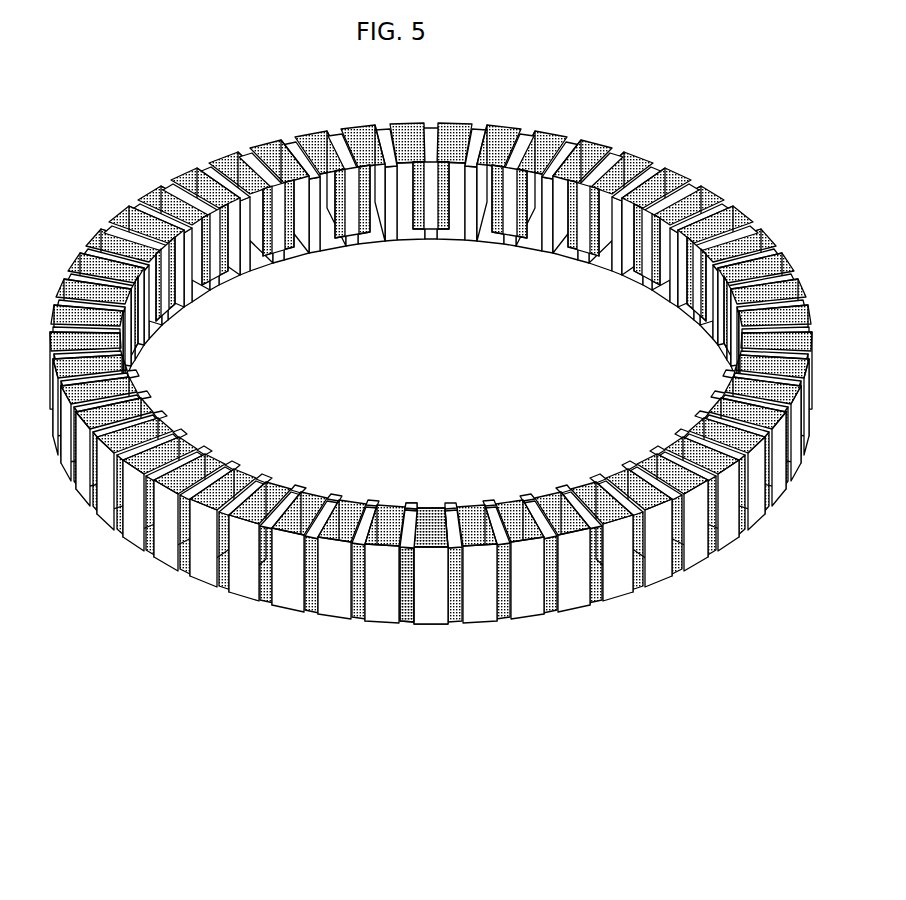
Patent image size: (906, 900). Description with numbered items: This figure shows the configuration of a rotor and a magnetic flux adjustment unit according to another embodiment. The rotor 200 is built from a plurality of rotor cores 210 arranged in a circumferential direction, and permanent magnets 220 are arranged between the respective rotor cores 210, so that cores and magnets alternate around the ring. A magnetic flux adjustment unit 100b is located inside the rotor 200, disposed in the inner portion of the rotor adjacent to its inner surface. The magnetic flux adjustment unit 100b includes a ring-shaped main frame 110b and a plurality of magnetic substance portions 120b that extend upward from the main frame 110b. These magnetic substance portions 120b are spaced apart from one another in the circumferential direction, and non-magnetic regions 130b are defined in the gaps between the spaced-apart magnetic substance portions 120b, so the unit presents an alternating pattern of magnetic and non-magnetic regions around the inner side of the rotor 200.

The magnetic flux adjustment unit 100b is at (431, 263).
The main frame 110b is at (510, 243).
The magnetic substance portions 120b is at (547, 218).
The non-magnetic regions 130b is at (573, 247).
The rotor 200 is at (431, 555).
The rotor cores 210 is at (480, 600).
The permanent magnets 220 is at (432, 600).